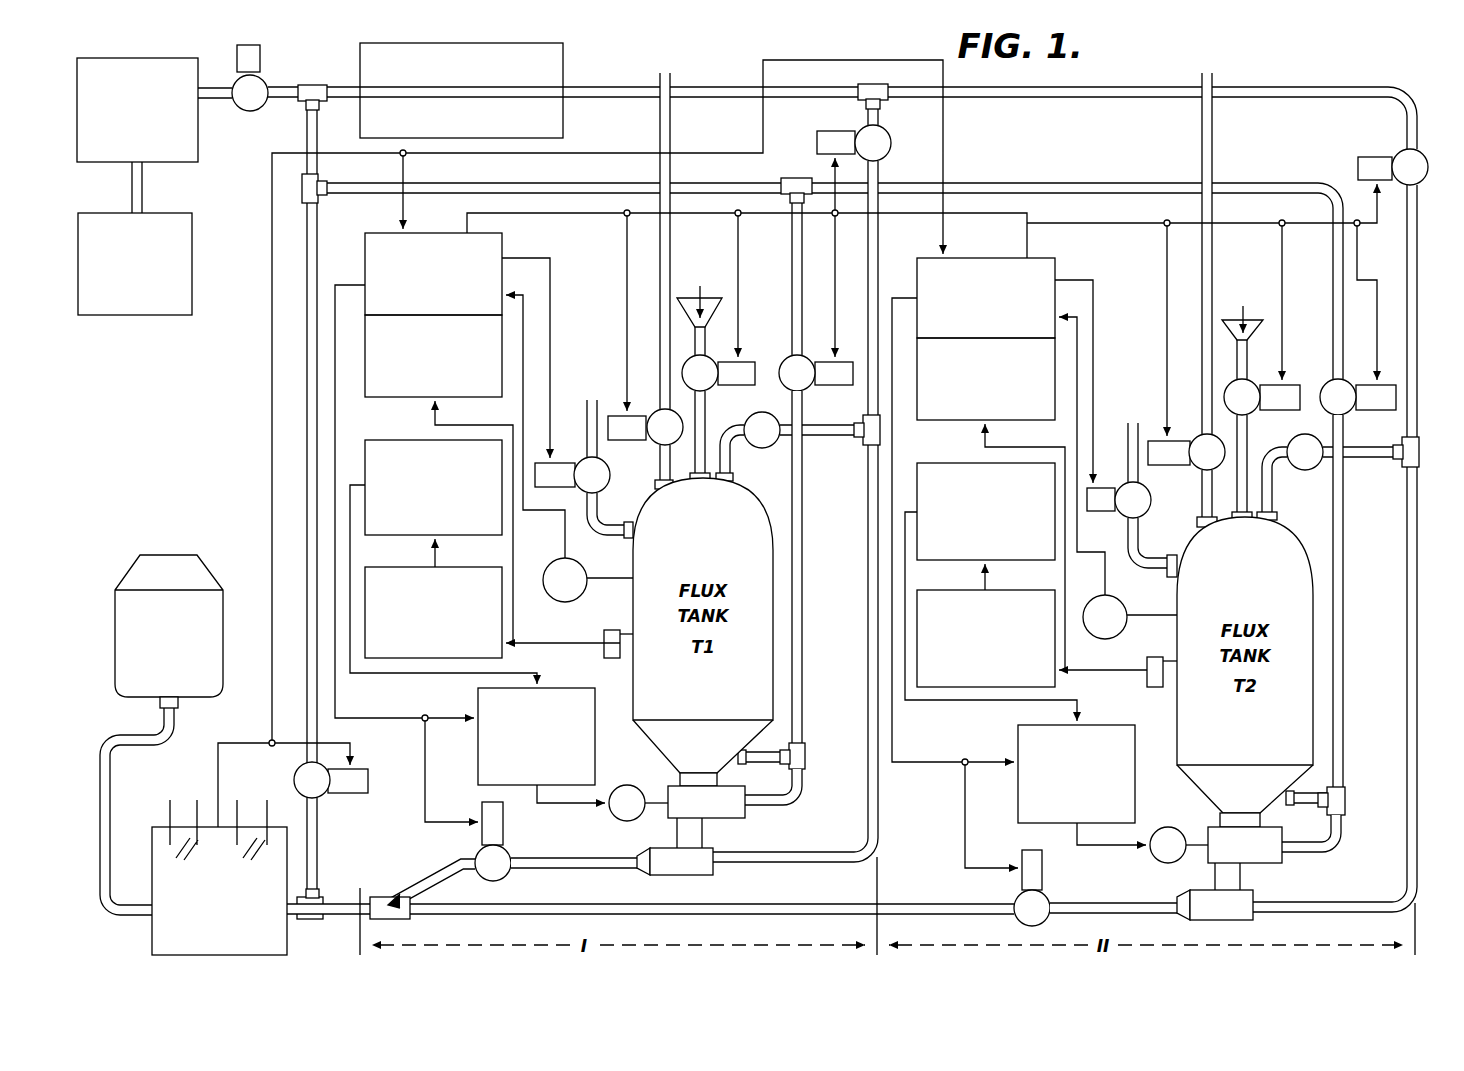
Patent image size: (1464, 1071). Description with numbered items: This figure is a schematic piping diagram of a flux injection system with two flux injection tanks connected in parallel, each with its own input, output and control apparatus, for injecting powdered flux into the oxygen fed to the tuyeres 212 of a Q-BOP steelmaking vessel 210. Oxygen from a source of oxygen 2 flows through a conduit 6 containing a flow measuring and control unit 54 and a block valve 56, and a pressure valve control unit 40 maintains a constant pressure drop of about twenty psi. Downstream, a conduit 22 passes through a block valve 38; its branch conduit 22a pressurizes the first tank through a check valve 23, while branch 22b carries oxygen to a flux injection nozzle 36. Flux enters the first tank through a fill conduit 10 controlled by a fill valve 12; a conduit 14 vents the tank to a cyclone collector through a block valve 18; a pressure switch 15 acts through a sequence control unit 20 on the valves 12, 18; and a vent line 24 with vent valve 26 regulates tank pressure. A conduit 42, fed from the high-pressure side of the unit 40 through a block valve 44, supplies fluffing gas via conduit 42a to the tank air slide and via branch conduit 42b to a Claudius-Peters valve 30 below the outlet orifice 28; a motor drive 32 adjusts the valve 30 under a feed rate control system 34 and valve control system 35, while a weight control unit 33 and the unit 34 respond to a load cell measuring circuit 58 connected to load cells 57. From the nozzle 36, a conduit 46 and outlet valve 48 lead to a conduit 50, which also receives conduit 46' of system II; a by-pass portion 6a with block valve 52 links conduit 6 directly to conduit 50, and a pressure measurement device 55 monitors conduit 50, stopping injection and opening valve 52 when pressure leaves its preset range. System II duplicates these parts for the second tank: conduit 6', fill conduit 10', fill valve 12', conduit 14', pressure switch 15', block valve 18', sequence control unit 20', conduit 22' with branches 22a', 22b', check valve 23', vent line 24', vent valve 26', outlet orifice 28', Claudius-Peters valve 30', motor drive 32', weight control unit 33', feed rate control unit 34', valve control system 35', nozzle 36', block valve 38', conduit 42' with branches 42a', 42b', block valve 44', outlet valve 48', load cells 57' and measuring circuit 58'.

The source of oxygen 2 is at (194, 262).
The flow measuring and control unit 54 is at (200, 151).
The block valve 56 is at (264, 82).
The conduit 6 is at (543, 70).
The conduit 6' is at (1150, 103).
The by-pass portion 6a is at (306, 430).
The pressure valve control unit 40 is at (565, 124).
The sequence control unit 20 is at (455, 269).
The sequence control unit 20' is at (1009, 290).
The weight control unit 33 is at (433, 366).
The weight control unit 33' is at (975, 392).
The feed rate control unit 34 is at (433, 475).
The feed rate control unit 34' is at (986, 499).
The load cell measuring and weight indicating circuit 58 is at (450, 612).
The load cell measuring and weight indicating circuit 58' is at (1006, 638).
The valve control system 35 is at (536, 720).
The valve control system 35' is at (1076, 760).
The load cells 57 is at (595, 637).
The load cells 57' is at (1144, 664).
The conduit 14 is at (660, 260).
The conduit 14' is at (1207, 279).
The fill conduit 10 is at (695, 308).
The fill conduit 10' is at (1251, 333).
The fill valve 12 is at (718, 404).
The fill valve 12' is at (1262, 430).
The block valve 18 is at (645, 411).
The block valve 18' is at (1186, 438).
The vent line 24 is at (594, 456).
The vent line 24' is at (1136, 488).
The vent valve 26 is at (585, 482).
The vent valve 26' is at (1134, 508).
The pressure switch 15 is at (580, 565).
The pressure switch 15' is at (1130, 607).
The block valve 38 is at (870, 122).
The block valve 38' is at (1393, 155).
The conduit 22 is at (894, 460).
The conduit 22' is at (1389, 472).
The branch conduit 22a is at (830, 448).
The branch conduit 22a' is at (1371, 462).
The branch conduit 22b is at (793, 769).
The branch conduit 22b' is at (1332, 795).
The check valve 23 is at (748, 446).
The check valve 23' is at (1290, 477).
The block valve 44 is at (803, 284).
The block valve 44' is at (1345, 301).
The conduit 42 is at (816, 568).
The conduit 42' is at (1362, 602).
The conduit 42a is at (771, 769).
The conduit 42a' is at (1315, 811).
The branch conduit 42b is at (798, 793).
The branch conduit 42b' is at (1340, 841).
The outlet orifice 28 is at (699, 753).
The outlet orifice 28' is at (1232, 796).
The Claudius-Peters valve 30 is at (718, 818).
The Claudius-Peters valve 30' is at (1261, 860).
The motor drive 32 is at (619, 814).
The motor drive 32' is at (1157, 853).
The flux injection nozzle 36 is at (693, 873).
The flux injection nozzle 36' is at (1243, 915).
The conduit 46 is at (575, 880).
The conduit 46' is at (1115, 923).
The outlet valve 48 is at (454, 860).
The outlet valve 48' is at (1009, 894).
The conduit 50 is at (142, 746).
The block valve 52 is at (328, 797).
The pressure measurement device 55 is at (152, 866).
The steelmaking vessel 210 is at (214, 585).
The tuyeres 212 is at (180, 703).